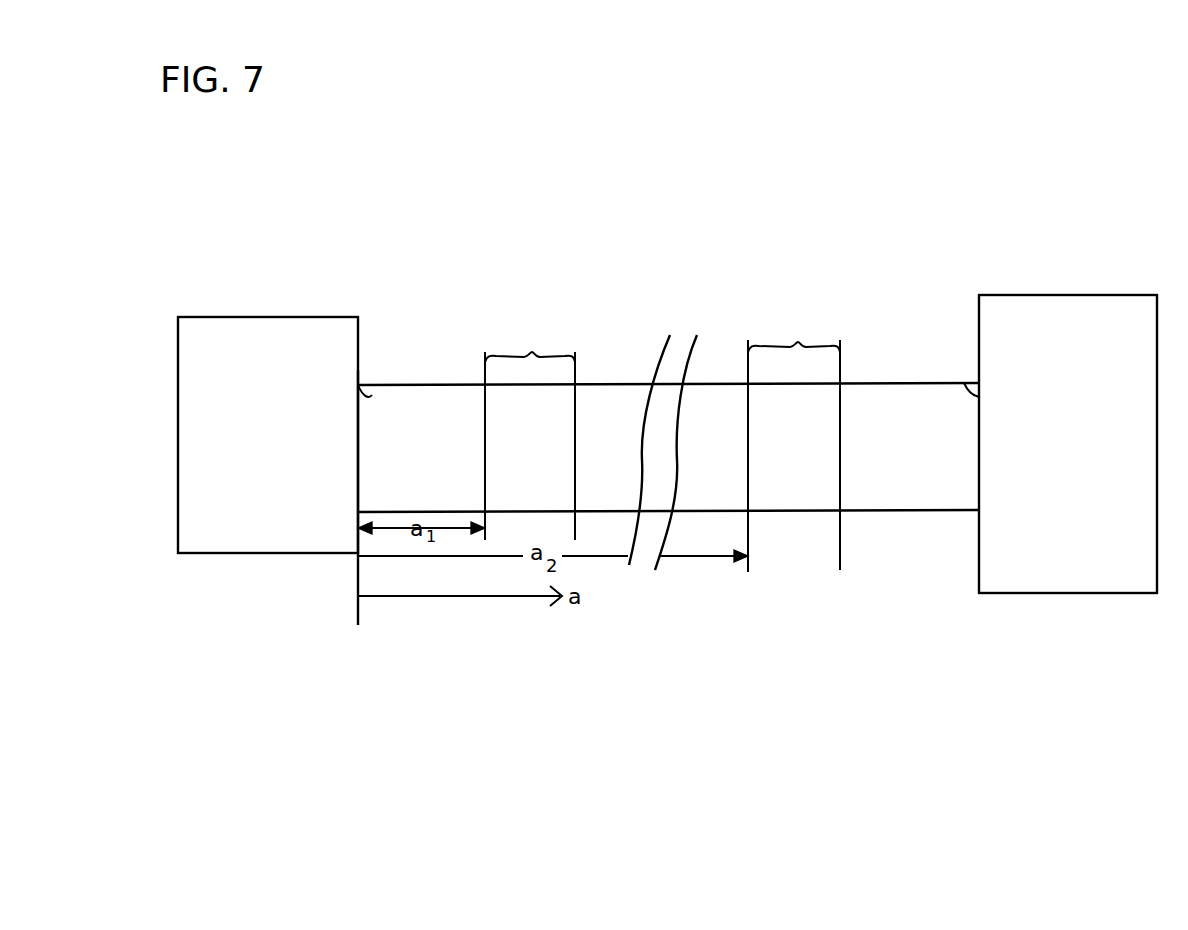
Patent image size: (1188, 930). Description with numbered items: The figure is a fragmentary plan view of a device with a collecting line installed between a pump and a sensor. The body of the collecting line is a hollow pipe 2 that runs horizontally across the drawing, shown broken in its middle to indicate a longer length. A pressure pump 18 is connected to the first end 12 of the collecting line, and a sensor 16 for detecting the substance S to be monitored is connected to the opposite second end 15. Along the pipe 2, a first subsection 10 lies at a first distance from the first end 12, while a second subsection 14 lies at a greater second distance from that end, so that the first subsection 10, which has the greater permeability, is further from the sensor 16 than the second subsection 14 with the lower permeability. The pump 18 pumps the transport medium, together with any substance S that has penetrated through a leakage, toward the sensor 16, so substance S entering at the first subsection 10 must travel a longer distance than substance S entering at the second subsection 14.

The hollow pipe 2 is at (896, 352).
The first subsection 10 is at (530, 426).
The first end 12 is at (360, 400).
The second subsection 14 is at (794, 442).
The second end 15 is at (968, 383).
The sensor 16 is at (1068, 325).
The pressure pump 18 is at (247, 332).
The substance to be monitored S is at (597, 358).